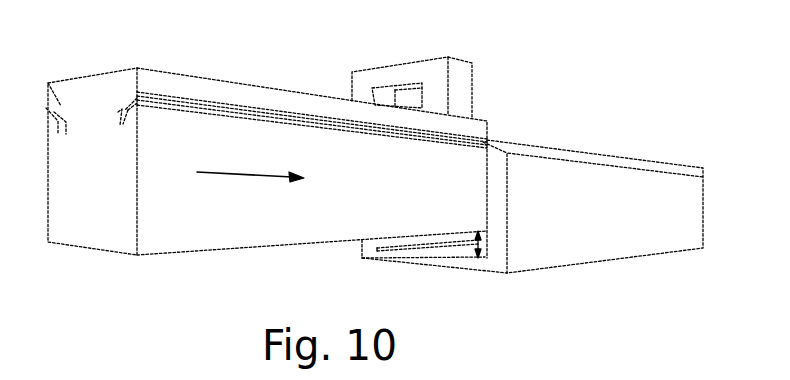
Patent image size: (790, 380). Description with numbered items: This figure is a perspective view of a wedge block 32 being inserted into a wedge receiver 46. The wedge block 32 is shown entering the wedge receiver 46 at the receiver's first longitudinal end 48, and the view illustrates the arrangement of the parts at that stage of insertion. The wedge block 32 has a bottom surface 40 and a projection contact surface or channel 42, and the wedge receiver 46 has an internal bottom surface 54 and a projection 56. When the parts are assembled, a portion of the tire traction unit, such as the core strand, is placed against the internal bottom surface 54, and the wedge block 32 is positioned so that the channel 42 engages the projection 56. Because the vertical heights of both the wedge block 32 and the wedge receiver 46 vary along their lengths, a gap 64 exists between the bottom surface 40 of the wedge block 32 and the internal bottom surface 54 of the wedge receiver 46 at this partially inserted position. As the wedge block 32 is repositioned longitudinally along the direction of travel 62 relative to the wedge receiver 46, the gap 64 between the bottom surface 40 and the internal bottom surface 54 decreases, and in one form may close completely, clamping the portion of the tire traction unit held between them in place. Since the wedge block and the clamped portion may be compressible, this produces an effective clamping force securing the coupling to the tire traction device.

The wedge block 32 is at (203, 251).
The bottom surface 40 is at (297, 246).
The channel 42 is at (127, 102).
The wedge receiver 46 is at (633, 258).
The first longitudinal end 48 is at (452, 257).
The internal bottom surface 54 is at (413, 250).
The projection 56 is at (483, 142).
The direction of travel 62 is at (257, 178).
The gap 64 is at (480, 243).